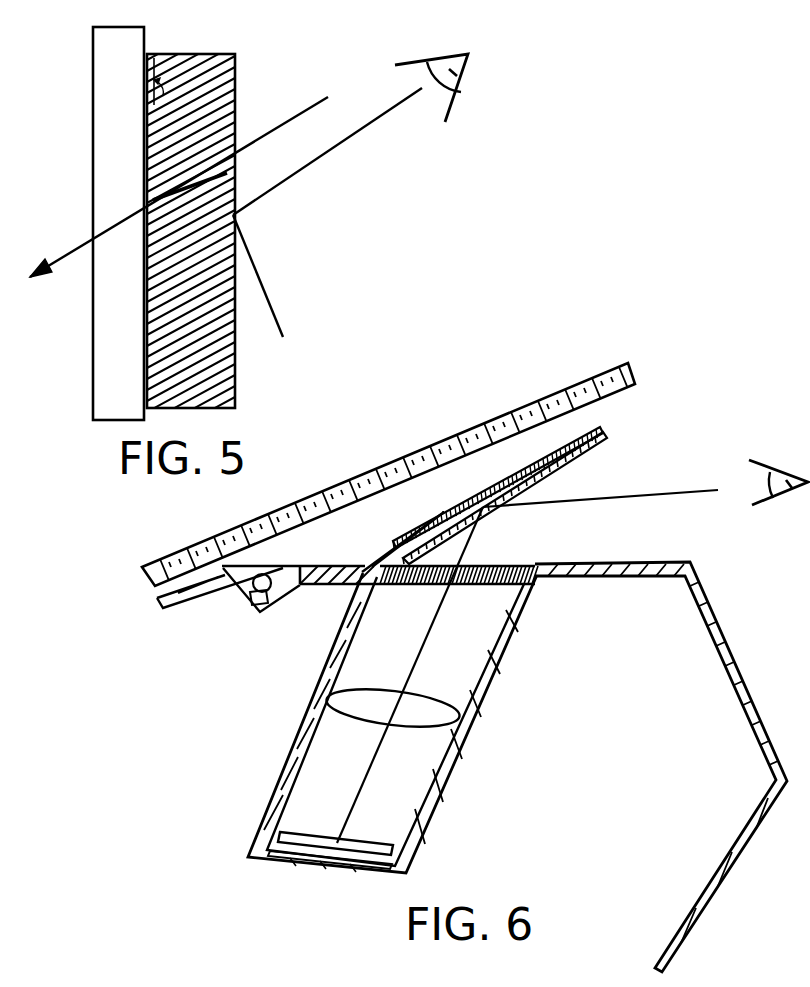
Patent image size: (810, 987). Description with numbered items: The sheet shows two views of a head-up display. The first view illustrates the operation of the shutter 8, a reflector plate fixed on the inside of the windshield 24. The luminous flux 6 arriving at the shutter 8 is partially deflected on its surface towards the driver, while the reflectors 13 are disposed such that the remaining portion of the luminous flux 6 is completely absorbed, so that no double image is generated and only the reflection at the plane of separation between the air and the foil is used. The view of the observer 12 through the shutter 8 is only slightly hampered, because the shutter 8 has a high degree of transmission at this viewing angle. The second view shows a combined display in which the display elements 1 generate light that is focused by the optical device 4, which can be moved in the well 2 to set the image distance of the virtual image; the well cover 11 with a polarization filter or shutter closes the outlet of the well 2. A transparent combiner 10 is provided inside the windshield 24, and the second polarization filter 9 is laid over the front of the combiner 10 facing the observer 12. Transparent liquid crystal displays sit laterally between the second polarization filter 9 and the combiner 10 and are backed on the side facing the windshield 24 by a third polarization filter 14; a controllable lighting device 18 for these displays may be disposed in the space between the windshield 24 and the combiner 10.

In FIG. 6, the display elements 1 is at (382, 851).
In FIG. 6, the well 2 is at (418, 778).
In FIG. 6, the optical device 4 is at (422, 718).
In FIG. 5, the luminous flux 6 is at (262, 285).
In FIG. 5, the shutter 8 is at (193, 68).
In FIG. 6, the second polarization filter 9 is at (573, 452).
In FIG. 6, the combiner 10 is at (599, 428).
In FIG. 6, the well cover 11 is at (490, 565).
In FIG. 5, the observer 12 is at (462, 90).
In FIG. 6, the observer 12 is at (800, 490).
In FIG. 5, the reflectors 13 is at (237, 106).
In FIG. 6, the third polarization filter 14 is at (441, 510).
In FIG. 6, the controllable lighting device 18 is at (272, 600).
In FIG. 5, the windshield 24 is at (108, 66).
In FIG. 6, the windshield 24 is at (584, 383).